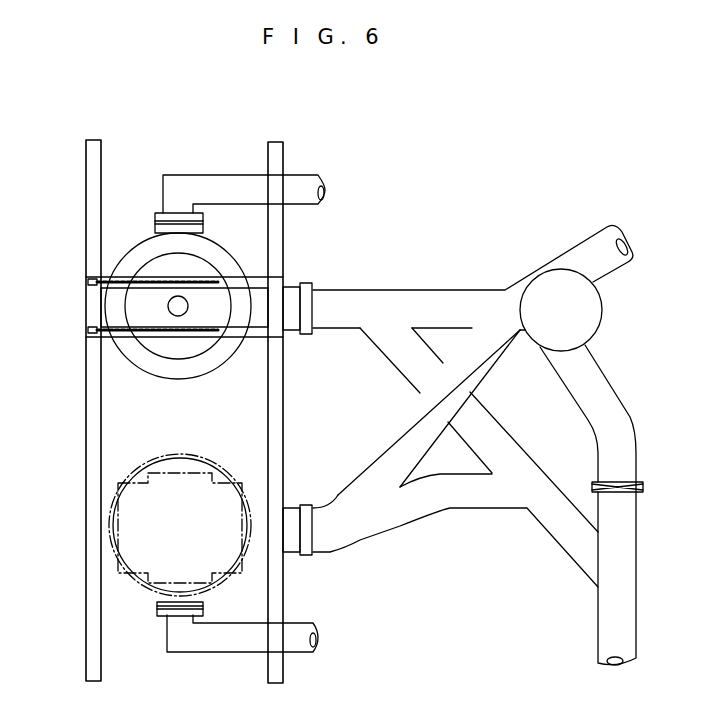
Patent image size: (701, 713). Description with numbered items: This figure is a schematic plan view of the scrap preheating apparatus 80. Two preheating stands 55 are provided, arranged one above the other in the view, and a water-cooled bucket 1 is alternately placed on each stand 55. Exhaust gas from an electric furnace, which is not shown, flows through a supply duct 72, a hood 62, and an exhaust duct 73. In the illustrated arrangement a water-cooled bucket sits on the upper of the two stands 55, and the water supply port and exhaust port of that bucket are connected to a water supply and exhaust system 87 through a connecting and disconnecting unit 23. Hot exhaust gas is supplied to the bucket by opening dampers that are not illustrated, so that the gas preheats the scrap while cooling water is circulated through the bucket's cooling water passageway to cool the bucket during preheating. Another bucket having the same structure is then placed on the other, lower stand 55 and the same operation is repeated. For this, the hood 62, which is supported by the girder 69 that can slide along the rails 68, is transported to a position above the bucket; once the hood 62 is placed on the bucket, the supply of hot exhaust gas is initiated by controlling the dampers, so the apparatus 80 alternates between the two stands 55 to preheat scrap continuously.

The water-cooled bucket 1 is at (249, 241).
The connecting and disconnecting unit 23 is at (155, 217).
The preheating stand 55 is at (176, 380).
The hood 62 is at (206, 348).
The rail 68 is at (86, 422).
The girder 69 is at (105, 280).
The supply duct 72 is at (427, 288).
The exhaust duct 73 is at (397, 381).
The scrap preheating apparatus 80 is at (198, 135).
The water supply and exhaust system 87 is at (190, 175).